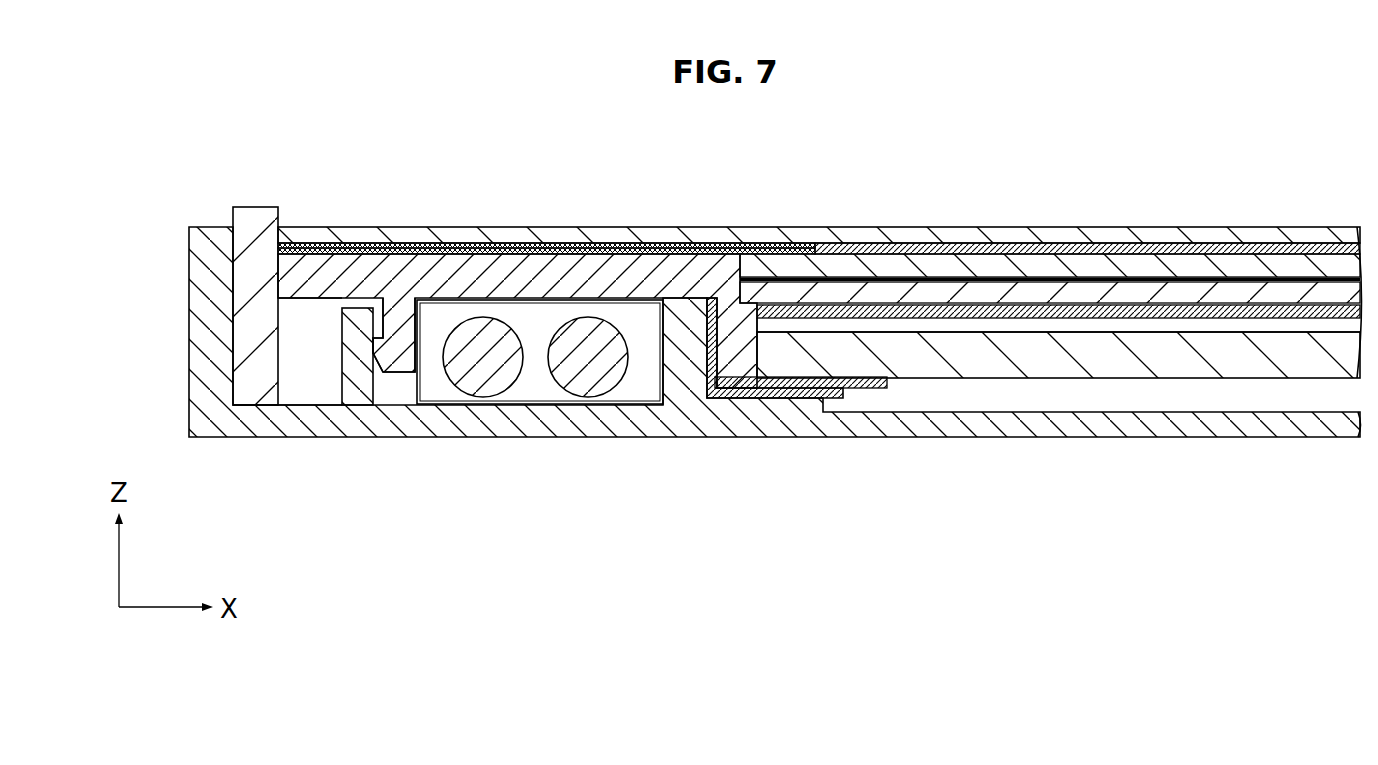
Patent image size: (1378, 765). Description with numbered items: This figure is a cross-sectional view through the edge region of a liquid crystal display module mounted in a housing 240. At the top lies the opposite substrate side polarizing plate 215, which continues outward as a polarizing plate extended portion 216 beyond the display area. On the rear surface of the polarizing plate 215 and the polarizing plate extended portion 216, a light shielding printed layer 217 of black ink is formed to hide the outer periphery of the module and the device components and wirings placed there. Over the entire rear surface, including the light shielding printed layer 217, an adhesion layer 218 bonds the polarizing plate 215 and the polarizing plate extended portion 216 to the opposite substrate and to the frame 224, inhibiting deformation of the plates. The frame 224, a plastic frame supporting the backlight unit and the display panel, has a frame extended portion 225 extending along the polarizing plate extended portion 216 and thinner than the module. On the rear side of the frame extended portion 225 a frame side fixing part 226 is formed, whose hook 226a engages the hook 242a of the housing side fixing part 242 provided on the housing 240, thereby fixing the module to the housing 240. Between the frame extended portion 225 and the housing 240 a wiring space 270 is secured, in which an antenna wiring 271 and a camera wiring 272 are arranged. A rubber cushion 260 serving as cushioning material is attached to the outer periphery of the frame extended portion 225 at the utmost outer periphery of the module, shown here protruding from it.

The opposite substrate side polarizing plate 215 is at (1019, 232).
The polarizing plate extended portion 216 is at (640, 238).
The light shielding printed layer 217 is at (768, 246).
The adhesion layer 218 is at (893, 249).
The frame 224 is at (773, 365).
The frame extended portion 225 is at (670, 280).
The frame side fixing part 226 is at (397, 335).
The hook of frame side fixing part 226a is at (395, 372).
The housing 240 is at (872, 424).
The housing side fixing part 242 is at (357, 362).
The hook of housing side fixing part 242a is at (380, 336).
The rubber cushion 260 is at (253, 225).
The wiring space 270 is at (540, 331).
The antenna wiring 271 is at (494, 392).
The camera wiring 272 is at (588, 372).